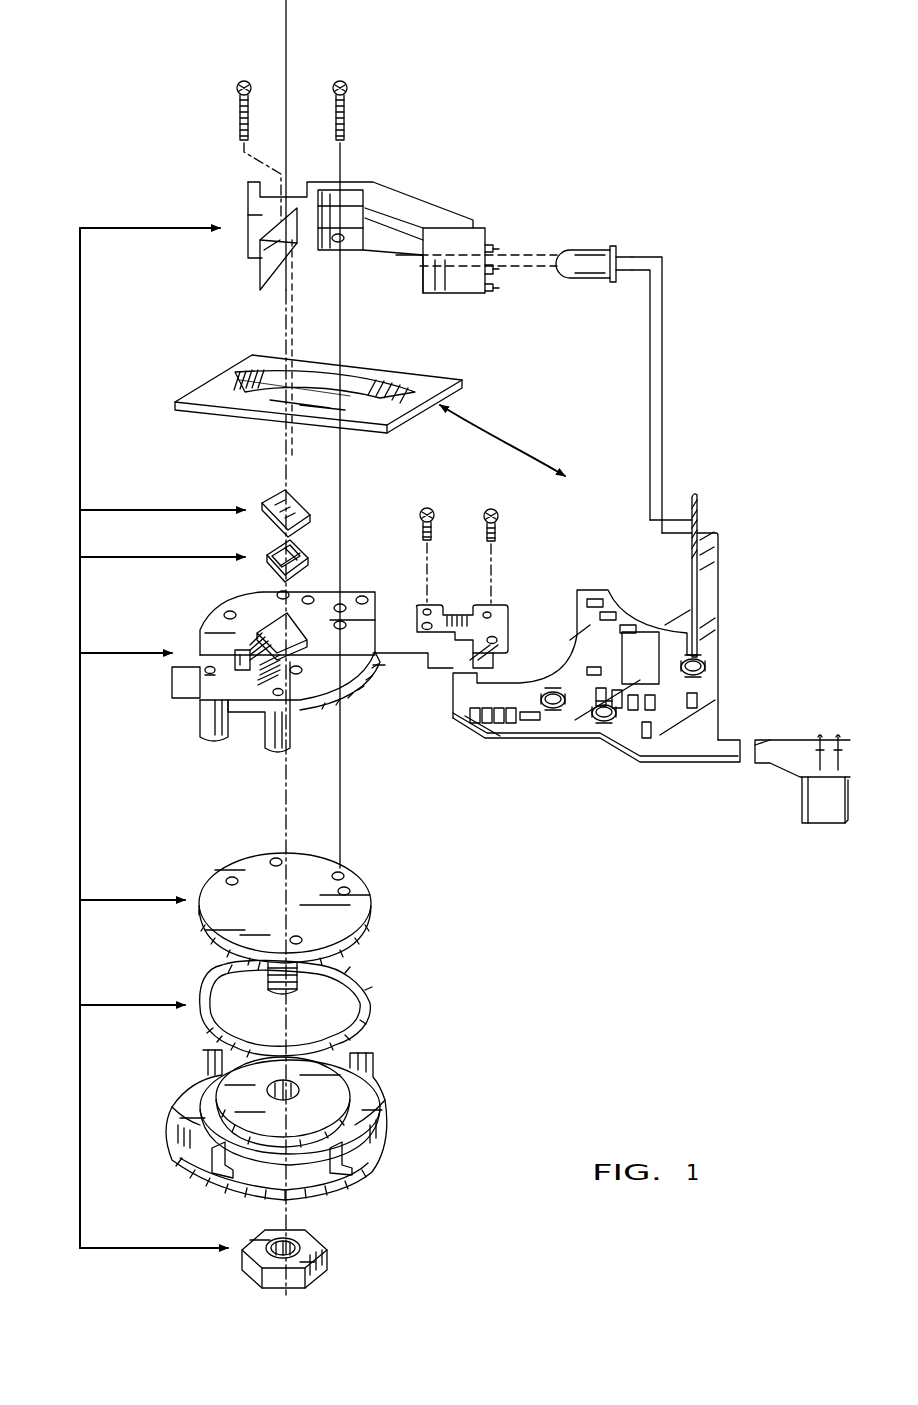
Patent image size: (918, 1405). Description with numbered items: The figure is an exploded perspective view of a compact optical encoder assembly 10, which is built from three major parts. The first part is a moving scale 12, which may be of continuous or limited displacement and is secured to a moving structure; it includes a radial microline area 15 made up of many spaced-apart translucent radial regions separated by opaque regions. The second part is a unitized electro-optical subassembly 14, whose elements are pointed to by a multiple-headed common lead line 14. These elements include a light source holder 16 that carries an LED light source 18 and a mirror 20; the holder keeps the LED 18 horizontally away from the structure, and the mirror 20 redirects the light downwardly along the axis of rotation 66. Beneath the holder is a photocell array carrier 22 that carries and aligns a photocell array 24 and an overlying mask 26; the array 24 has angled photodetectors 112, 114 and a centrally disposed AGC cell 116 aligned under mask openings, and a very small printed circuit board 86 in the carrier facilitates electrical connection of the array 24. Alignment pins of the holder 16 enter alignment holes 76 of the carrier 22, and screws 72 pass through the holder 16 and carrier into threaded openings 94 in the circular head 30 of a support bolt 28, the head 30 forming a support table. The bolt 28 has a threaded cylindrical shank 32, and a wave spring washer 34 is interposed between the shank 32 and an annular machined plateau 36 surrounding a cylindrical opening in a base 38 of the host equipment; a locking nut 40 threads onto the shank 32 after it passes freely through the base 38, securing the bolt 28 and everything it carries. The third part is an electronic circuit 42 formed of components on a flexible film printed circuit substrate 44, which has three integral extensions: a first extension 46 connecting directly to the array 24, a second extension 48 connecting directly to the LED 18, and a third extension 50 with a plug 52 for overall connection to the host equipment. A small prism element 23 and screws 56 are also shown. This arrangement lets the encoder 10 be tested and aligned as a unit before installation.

The compact optical encoder assembly 10 is at (628, 1015).
The moving scale 12 is at (425, 383).
The unitized encoder electro-optical subassembly structure 14 is at (80, 468).
The radial microline area 15 is at (368, 390).
The light source holder 16 is at (422, 210).
The LED light source 18 is at (582, 258).
The mirror 20 is at (300, 268).
The photocell array carrier 22 is at (262, 671).
The prism 23 is at (300, 650).
The photocell array 24 is at (286, 556).
The mask 26 is at (265, 500).
The support bolt 28 is at (202, 915).
The circular head 30 is at (281, 888).
The threaded cylindrical shank 32 is at (297, 985).
The wave spring washer 34 is at (372, 998).
The annular machined plateau 36 is at (360, 1088).
The base 38 is at (368, 1172).
The locking nut 40 is at (293, 1244).
The electronic circuit 42 is at (596, 712).
The flexible film printed circuit substrate 44 is at (528, 728).
The first extension 46 is at (507, 628).
The second extension 48 is at (712, 560).
The third extension 50 is at (790, 780).
The plug 52 is at (824, 822).
The screws 56 is at (486, 516).
The axis of rotation 66 is at (288, 28).
The screws 72 is at (236, 88).
The alignment holes 76 is at (268, 1258).
The printed circuit board 86 is at (210, 673).
The threaded openings 94 is at (272, 860).
The photodetector 112 is at (272, 556).
The photodetector 114 is at (306, 564).
The AGC cell 116 is at (297, 548).